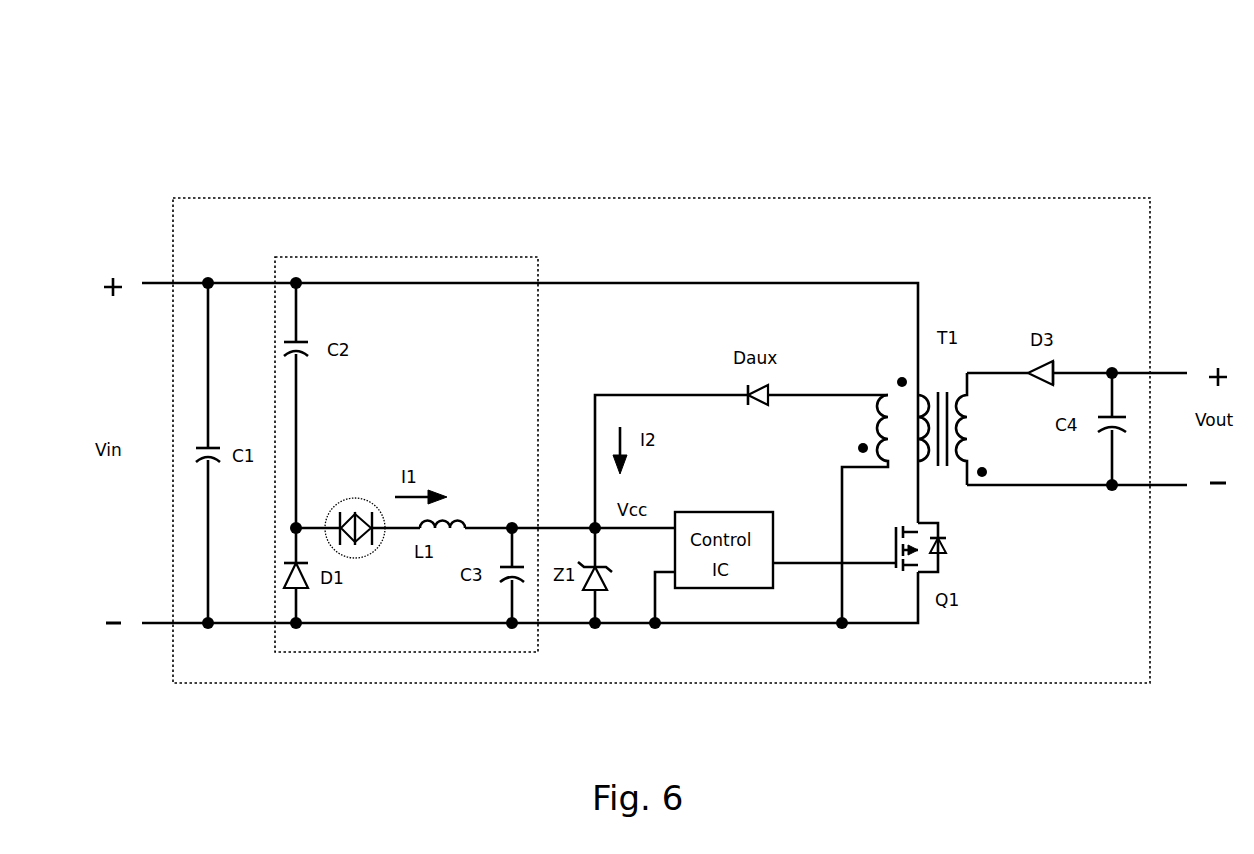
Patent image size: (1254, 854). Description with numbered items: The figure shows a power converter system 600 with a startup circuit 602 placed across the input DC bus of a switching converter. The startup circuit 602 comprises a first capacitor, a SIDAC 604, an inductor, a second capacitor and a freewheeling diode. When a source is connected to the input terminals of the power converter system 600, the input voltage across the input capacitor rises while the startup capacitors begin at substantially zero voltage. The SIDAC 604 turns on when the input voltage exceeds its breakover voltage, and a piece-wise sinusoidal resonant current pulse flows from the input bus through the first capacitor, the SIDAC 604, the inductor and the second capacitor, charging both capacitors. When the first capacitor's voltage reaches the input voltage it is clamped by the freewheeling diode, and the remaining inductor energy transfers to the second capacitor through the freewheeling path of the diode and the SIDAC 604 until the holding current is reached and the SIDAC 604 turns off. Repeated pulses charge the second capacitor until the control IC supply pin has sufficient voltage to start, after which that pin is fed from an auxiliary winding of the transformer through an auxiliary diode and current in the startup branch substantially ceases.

The power converter system 600 is at (317, 199).
The startup circuit 602 is at (383, 254).
The SIDAC 604 is at (368, 498).